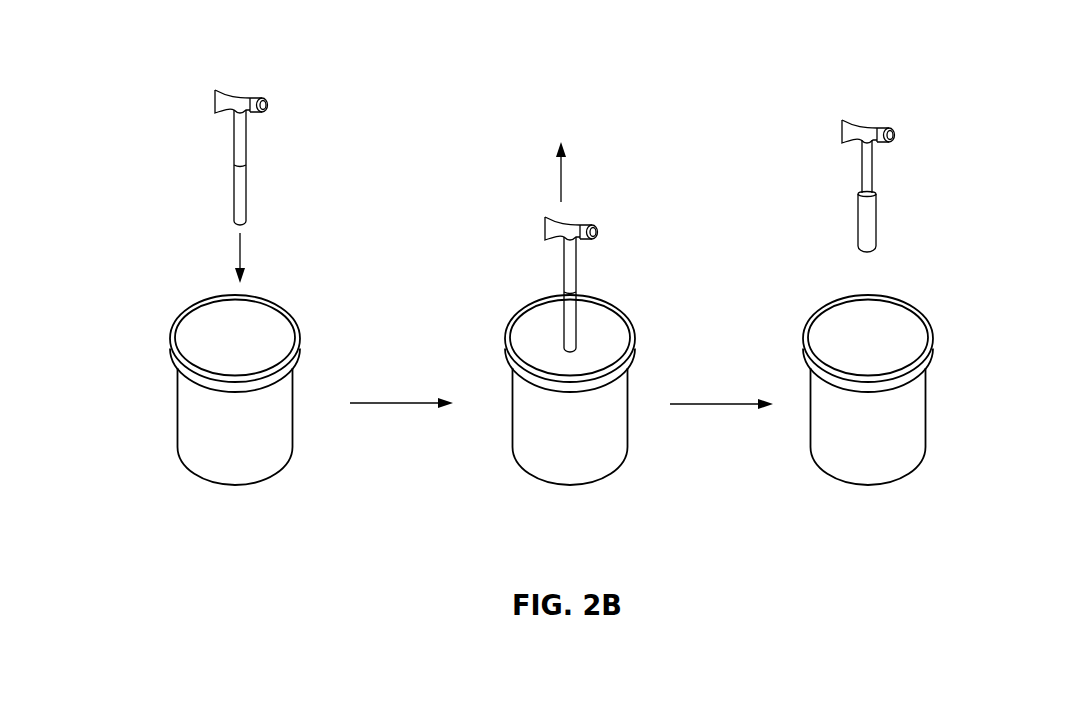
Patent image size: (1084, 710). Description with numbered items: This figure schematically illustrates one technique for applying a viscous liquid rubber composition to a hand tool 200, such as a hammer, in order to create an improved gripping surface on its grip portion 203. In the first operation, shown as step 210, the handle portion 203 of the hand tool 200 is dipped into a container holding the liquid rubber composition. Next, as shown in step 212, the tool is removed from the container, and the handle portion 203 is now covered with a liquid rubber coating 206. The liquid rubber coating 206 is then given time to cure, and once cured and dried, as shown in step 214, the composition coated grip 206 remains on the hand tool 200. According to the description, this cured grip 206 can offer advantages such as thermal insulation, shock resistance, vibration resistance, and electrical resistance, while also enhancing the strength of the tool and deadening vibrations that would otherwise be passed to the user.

The hand tool 200 is at (237, 95).
The grip portion 203 is at (237, 207).
The liquid rubber coating 206 is at (878, 228).
The step 210 is at (128, 444).
The step 212 is at (452, 444).
The step 214 is at (784, 444).